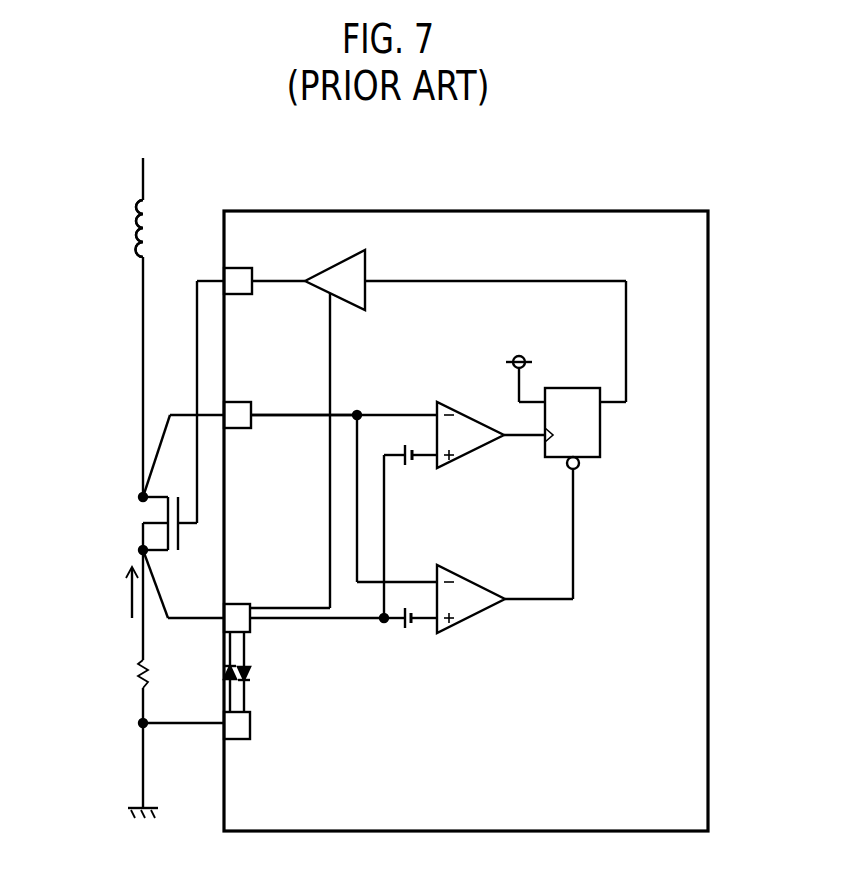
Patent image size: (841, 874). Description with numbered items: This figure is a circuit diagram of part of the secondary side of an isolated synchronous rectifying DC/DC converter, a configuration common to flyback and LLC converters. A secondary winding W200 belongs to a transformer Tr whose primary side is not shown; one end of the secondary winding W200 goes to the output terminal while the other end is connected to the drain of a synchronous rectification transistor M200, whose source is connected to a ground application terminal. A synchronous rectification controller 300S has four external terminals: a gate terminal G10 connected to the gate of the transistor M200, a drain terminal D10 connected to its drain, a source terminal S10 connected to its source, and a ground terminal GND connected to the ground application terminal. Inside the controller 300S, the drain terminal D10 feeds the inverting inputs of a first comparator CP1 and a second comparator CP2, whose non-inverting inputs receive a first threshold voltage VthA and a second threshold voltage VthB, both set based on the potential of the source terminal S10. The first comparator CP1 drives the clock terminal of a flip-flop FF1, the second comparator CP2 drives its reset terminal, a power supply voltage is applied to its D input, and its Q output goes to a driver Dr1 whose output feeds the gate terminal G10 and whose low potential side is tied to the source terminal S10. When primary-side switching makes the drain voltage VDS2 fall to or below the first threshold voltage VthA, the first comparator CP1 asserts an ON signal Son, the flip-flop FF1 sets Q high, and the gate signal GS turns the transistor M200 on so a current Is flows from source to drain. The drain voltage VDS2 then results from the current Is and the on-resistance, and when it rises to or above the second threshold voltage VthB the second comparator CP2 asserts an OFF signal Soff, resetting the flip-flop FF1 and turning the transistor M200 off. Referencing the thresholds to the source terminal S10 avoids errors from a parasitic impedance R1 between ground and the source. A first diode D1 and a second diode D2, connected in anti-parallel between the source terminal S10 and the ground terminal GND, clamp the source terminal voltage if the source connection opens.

The transformer Tr is at (130, 194).
The secondary winding W200 is at (150, 217).
The synchronous rectification controller 300S is at (688, 211).
The gate terminal G10 is at (242, 268).
The gate signal GS is at (176, 402).
The driver Dr1 is at (316, 250).
The drain terminal D10 is at (241, 402).
The drain voltage VDS2 is at (304, 429).
The first comparator CP1 is at (455, 409).
The ON signal Son is at (519, 451).
The first threshold voltage VthA is at (419, 531).
The flip-flop FF1 is at (602, 458).
The second comparator CP2 is at (470, 580).
The OFF signal Soff is at (539, 615).
The second threshold voltage VthB is at (411, 633).
The synchronous rectification transistor M200 is at (142, 512).
The current Is is at (121, 592).
The source terminal S10 is at (240, 604).
The first diode D1 is at (226, 676).
The second diode D2 is at (248, 673).
The ground terminal GND is at (250, 738).
The parasitic impedance R1 is at (124, 674).